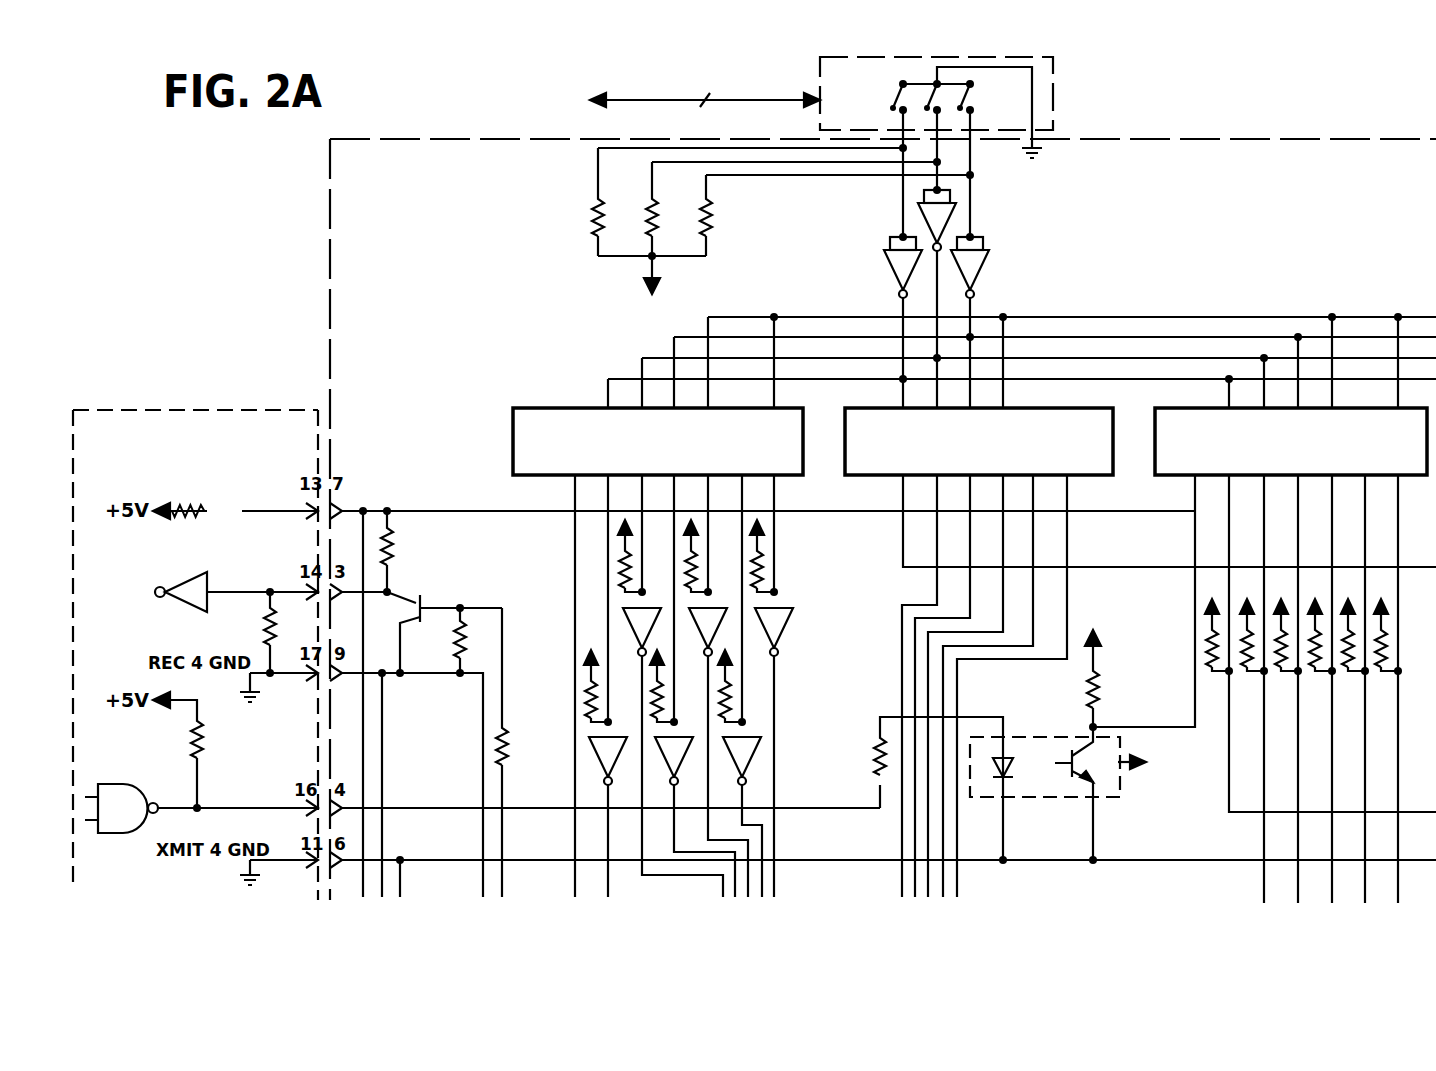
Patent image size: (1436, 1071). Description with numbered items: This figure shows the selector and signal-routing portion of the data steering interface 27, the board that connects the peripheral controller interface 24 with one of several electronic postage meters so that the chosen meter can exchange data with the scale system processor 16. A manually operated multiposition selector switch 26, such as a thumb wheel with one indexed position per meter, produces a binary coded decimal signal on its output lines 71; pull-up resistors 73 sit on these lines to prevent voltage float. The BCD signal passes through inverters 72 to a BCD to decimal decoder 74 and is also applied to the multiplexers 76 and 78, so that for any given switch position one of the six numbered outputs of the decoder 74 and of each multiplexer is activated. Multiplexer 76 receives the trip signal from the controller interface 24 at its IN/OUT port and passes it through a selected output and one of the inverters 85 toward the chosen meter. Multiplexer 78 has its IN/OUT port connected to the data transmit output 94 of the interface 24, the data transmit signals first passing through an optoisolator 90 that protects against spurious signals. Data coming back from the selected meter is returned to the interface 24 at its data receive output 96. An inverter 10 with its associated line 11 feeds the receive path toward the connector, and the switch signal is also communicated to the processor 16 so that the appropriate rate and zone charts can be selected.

The inverter input 10 is at (165, 592).
The receive data line 11 is at (261, 579).
The system processor 16 is at (705, 89).
The peripheral controller interface 24 is at (195, 636).
The selector switch 26 is at (1055, 104).
The data steering interface 27 is at (1228, 136).
The output lines 71 is at (970, 175).
The inverters 72 is at (986, 278).
The pull-up resistors 73 is at (711, 236).
The BCD to decimal decoder 74 is at (876, 408).
The multiplexer 76 is at (578, 408).
The multiplexer 78 is at (1156, 408).
The inverters 85 is at (778, 677).
The optoisolator 90 is at (1112, 797).
The data transmit output 94 is at (292, 803).
The data receive output 96 is at (298, 590).